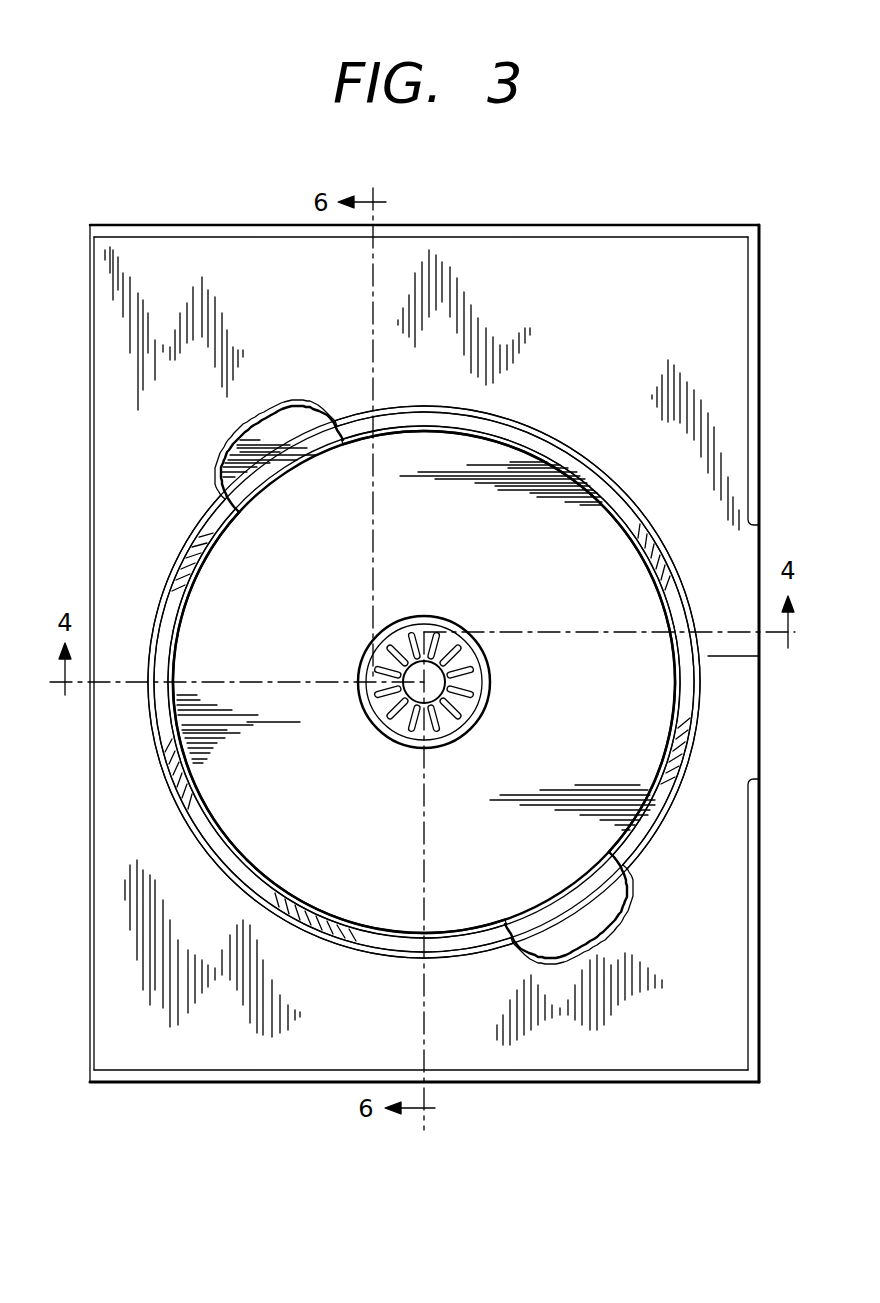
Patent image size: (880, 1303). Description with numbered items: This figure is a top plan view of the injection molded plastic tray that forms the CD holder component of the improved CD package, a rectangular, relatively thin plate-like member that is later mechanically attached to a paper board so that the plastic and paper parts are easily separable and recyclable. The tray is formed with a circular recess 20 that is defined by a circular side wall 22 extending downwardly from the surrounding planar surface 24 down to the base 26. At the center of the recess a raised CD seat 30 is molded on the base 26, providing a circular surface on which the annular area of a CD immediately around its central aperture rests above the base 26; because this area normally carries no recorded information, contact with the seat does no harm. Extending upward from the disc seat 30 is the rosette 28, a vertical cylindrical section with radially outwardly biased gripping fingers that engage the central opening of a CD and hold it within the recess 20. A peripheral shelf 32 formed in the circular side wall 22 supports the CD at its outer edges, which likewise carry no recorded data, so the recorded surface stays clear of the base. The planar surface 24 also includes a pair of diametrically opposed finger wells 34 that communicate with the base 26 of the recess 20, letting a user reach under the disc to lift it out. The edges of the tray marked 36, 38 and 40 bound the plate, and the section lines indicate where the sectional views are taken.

The circular recess 20 is at (590, 543).
The circular side wall 22 is at (183, 621).
The planar surface 24 is at (620, 350).
The base 26 is at (507, 552).
The rosette 28 is at (482, 653).
The raised CD seat 30 is at (372, 678).
The peripheral shelf 32 is at (187, 790).
The finger wells 34 is at (282, 432).
The top side wall 36 is at (572, 237).
The bottom side wall 38 is at (366, 1070).
The left side wall 40 is at (95, 502).